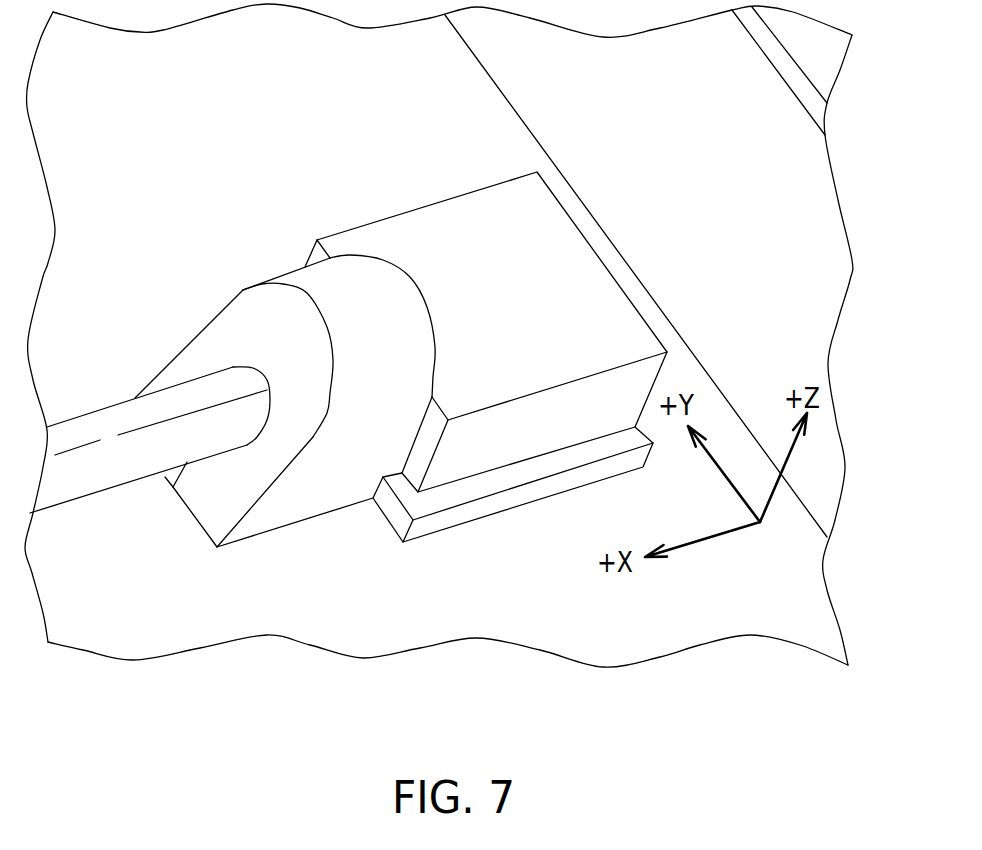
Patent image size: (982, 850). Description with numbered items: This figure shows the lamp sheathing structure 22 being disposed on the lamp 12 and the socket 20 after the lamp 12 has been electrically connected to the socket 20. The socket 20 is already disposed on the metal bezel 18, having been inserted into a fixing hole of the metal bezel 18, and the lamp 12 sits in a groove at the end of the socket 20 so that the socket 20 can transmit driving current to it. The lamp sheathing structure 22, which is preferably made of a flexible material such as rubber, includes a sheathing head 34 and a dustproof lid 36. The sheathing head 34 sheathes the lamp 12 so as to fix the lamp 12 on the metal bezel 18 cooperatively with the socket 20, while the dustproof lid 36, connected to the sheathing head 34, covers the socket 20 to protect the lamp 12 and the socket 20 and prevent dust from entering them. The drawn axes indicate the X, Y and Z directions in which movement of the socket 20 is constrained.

The lamp 12 is at (107, 462).
The metal bezel 18 is at (812, 198).
The socket 20 is at (503, 501).
The lamp sheathing structure 22 is at (401, 307).
The sheathing head 34 is at (272, 323).
The dustproof lid 36 is at (407, 230).